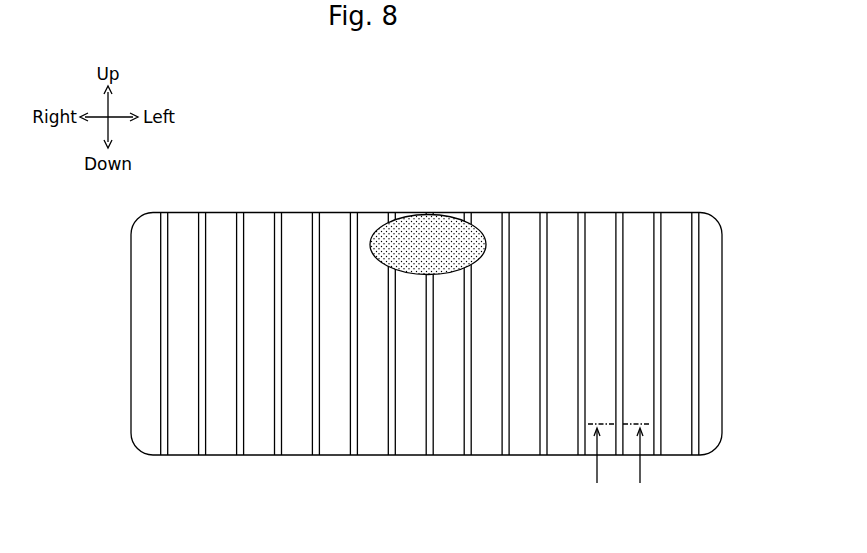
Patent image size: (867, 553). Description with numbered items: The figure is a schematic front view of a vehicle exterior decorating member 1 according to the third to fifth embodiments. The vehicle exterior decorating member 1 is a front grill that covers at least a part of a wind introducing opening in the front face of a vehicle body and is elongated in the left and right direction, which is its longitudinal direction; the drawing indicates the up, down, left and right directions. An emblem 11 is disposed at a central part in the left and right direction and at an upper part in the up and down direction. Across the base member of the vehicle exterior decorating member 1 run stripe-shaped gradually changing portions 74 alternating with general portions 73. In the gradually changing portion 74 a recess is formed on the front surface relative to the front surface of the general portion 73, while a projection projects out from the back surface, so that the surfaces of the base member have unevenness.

The vehicle exterior decorating member 1 is at (429, 300).
The emblem 11 is at (425, 216).
The general portion 73 is at (599, 229).
The gradually changing portion 74 is at (617, 217).